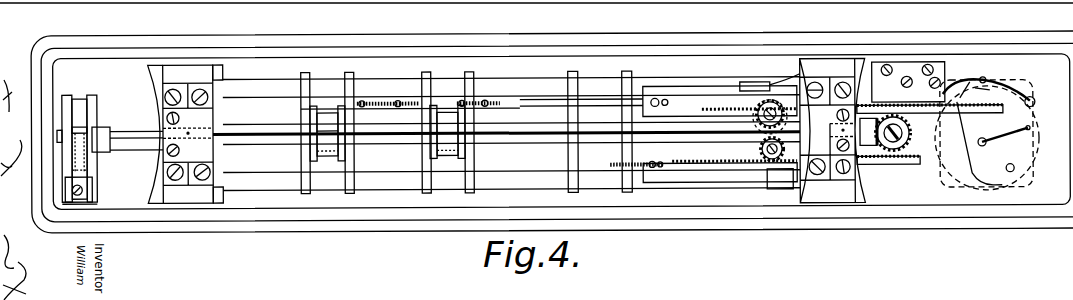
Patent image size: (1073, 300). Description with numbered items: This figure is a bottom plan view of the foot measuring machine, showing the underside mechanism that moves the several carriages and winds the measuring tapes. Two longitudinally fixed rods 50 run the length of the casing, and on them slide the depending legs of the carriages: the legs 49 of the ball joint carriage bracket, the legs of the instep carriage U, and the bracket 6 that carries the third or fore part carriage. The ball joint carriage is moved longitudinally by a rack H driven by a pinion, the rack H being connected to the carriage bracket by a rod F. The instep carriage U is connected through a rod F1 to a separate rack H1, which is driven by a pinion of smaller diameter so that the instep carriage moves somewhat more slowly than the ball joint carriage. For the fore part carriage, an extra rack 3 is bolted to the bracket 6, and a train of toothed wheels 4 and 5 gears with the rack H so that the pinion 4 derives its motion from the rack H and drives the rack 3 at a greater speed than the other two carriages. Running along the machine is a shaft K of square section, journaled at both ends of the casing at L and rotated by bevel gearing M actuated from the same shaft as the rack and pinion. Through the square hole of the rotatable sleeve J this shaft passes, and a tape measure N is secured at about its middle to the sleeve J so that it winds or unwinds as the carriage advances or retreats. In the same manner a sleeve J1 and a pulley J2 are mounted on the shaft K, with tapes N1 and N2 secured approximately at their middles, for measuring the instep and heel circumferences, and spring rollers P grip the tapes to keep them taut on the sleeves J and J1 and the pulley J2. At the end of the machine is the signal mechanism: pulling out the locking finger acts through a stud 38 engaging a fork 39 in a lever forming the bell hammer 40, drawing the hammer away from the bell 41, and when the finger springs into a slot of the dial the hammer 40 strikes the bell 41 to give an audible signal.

The pulley J2 is at (83, 108).
The tape N2 is at (78, 155).
The journals L is at (170, 115).
The shaft of square section K is at (127, 142).
The spring roller P is at (86, 181).
The longitudinally fixed rods 50 is at (254, 80).
The sleeve J1 is at (322, 122).
The instep carriage U is at (312, 160).
The tape N1 is at (327, 148).
The rod F1 is at (395, 105).
The tape measure N is at (437, 152).
The rotatable sleeve J is at (465, 152).
The legs 49 is at (468, 77).
The rod F is at (535, 103).
The bracket 6 is at (628, 77).
The rack H is at (660, 95).
The toothed wheel 5 is at (774, 107).
The rack H1 is at (727, 110).
The pinion 4 is at (761, 150).
The extra rack 3 is at (902, 190).
The bevel gearing M is at (901, 141).
The stud 38 is at (986, 138).
The fork 39 is at (1004, 140).
The bell hammer 40 is at (1032, 99).
The bell 41 is at (1038, 163).